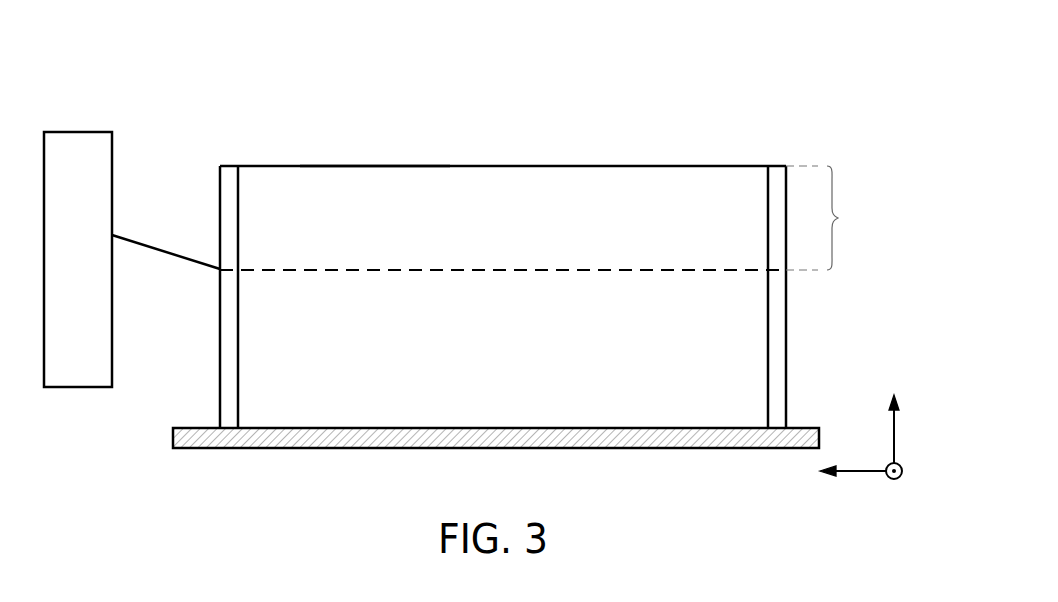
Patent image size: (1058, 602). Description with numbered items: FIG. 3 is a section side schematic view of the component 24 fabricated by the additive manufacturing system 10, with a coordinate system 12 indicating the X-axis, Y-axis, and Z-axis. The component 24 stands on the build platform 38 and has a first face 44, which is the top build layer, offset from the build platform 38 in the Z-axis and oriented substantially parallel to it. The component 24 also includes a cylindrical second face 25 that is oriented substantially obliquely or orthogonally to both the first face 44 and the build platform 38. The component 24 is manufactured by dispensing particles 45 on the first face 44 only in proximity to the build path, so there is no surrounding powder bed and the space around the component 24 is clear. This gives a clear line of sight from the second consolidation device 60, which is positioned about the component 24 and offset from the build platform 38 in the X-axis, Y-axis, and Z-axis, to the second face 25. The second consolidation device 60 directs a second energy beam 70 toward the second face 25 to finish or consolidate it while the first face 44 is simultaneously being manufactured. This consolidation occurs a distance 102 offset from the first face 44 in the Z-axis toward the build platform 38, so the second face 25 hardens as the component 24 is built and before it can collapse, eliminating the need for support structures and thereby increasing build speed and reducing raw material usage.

The additive manufacturing system 10 is at (788, 63).
The coordinate system 12 is at (892, 357).
The component 24 is at (574, 188).
The second face 25 is at (218, 208).
The build platform 38 is at (812, 428).
The first face 44 is at (454, 166).
The particles 45 is at (690, 196).
The second consolidation device 60 is at (80, 132).
The second energy beam 70 is at (155, 247).
The distance 102 is at (836, 218).